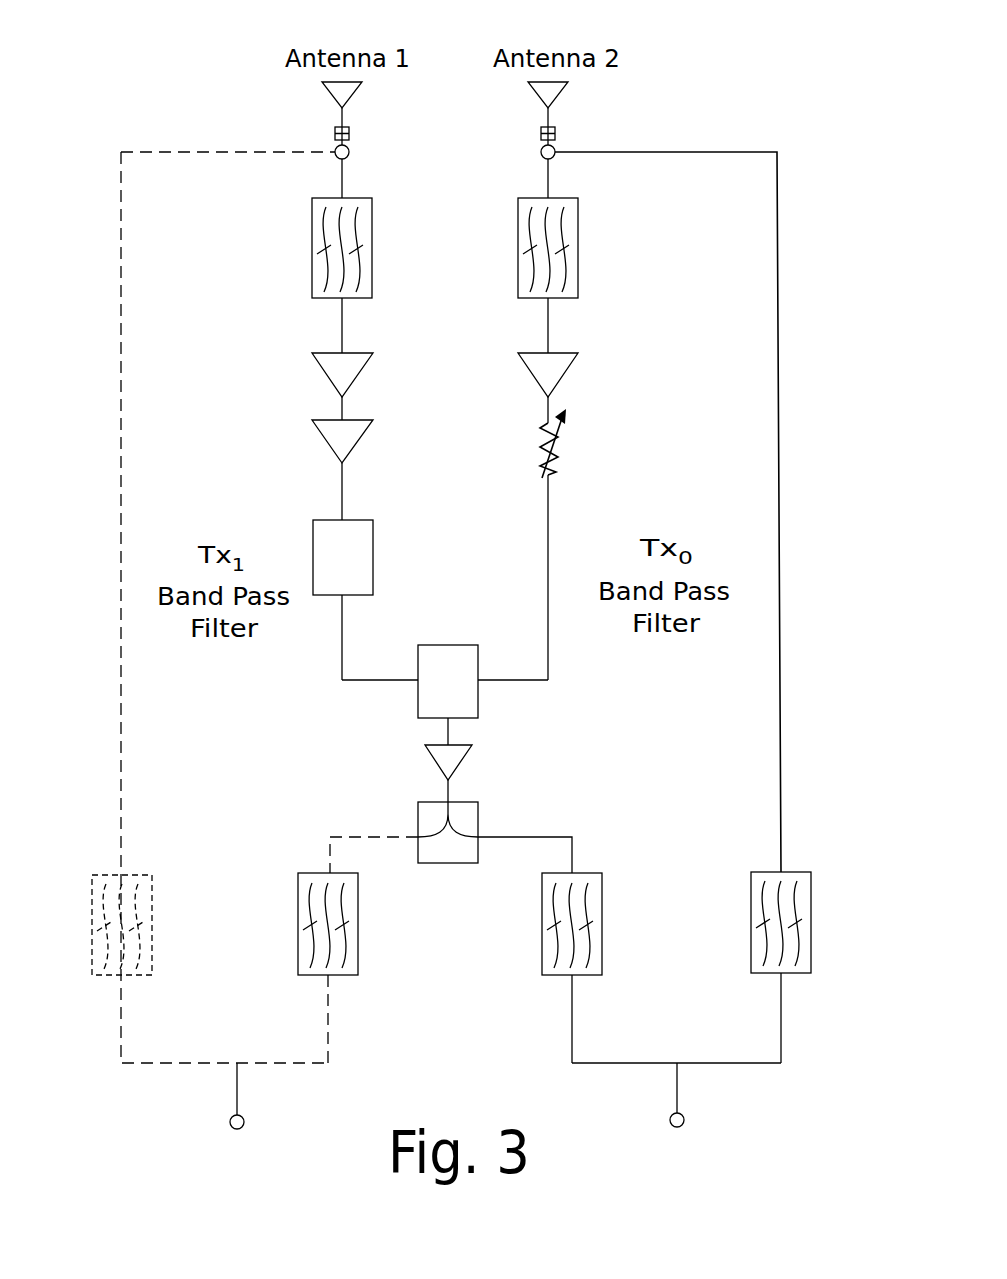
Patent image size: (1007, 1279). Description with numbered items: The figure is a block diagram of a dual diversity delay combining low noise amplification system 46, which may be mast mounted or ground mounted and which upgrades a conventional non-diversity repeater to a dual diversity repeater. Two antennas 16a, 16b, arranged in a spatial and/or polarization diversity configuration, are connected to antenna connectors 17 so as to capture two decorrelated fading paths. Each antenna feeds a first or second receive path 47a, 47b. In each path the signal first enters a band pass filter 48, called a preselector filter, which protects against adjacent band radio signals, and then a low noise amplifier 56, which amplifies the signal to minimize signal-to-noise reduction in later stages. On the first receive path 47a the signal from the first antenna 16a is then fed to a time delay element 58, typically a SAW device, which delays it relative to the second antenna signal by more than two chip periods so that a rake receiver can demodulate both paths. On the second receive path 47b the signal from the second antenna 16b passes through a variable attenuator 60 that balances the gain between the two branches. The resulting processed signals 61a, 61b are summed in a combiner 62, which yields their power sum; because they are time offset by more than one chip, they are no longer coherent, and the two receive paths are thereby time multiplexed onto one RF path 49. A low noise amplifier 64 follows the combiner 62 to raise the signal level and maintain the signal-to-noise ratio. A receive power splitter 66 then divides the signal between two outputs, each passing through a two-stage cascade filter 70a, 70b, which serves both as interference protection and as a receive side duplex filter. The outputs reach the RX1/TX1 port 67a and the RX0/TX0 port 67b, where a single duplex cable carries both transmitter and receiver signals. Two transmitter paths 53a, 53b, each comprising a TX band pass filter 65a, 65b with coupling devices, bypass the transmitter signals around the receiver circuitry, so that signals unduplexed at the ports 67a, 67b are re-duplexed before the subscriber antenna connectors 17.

The dual diversity delay combining low noise amplification system 46 is at (698, 122).
The first antenna 16a is at (350, 103).
The second antenna 16b is at (542, 104).
The antenna connector 17 is at (335, 133).
The first receive path 47a is at (265, 170).
The second receive path 47b is at (670, 398).
The band pass filter 48 is at (372, 258).
The low noise amplifier 56 is at (352, 352).
The variable attenuator 60 is at (547, 428).
The time delay element 58 is at (314, 520).
The first processed signal 61a is at (342, 664).
The second processed signal 61b is at (553, 662).
The combiner 62 is at (448, 645).
The RF path 49 is at (452, 730).
The low noise amplifier 64 is at (435, 768).
The receive power splitter 66 is at (480, 826).
The two-stage cascade filter 70a is at (298, 912).
The two-stage cascade filter 70b is at (602, 906).
The TX band pass filter 65a is at (142, 977).
The TX band pass filter 65b is at (772, 975).
The RX1/TX1 port 67a is at (237, 1093).
The RX0/TX0 port 67b is at (677, 1082).
The transmitter path 53a is at (108, 720).
The transmitter path 53b is at (797, 728).